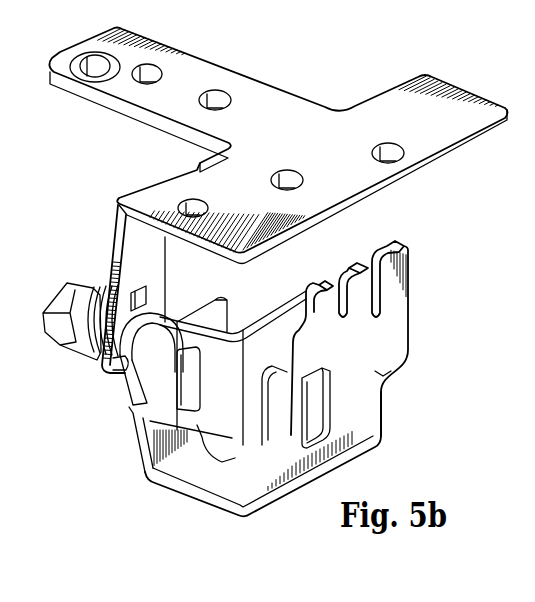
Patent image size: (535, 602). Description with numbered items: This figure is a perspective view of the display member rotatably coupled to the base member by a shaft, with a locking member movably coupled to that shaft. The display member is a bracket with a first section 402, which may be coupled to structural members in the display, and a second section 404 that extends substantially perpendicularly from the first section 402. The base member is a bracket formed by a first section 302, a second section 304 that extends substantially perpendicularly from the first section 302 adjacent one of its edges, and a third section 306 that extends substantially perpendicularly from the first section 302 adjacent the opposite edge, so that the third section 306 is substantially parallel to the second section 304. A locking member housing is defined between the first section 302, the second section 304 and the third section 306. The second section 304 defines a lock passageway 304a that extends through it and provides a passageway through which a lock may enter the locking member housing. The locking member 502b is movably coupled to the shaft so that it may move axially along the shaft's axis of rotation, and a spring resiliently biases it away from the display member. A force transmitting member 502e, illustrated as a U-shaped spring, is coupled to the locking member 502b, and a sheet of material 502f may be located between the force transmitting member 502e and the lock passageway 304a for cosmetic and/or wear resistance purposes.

The first section 402 is at (293, 102).
The second section 404 is at (110, 253).
The first section 302 is at (158, 478).
The second section 304 is at (394, 344).
The lock passageway 304a is at (320, 400).
The third section 306 is at (135, 436).
The locking member 502b is at (158, 393).
The force transmitting member 502e is at (207, 457).
The sheet of material 502f is at (260, 362).